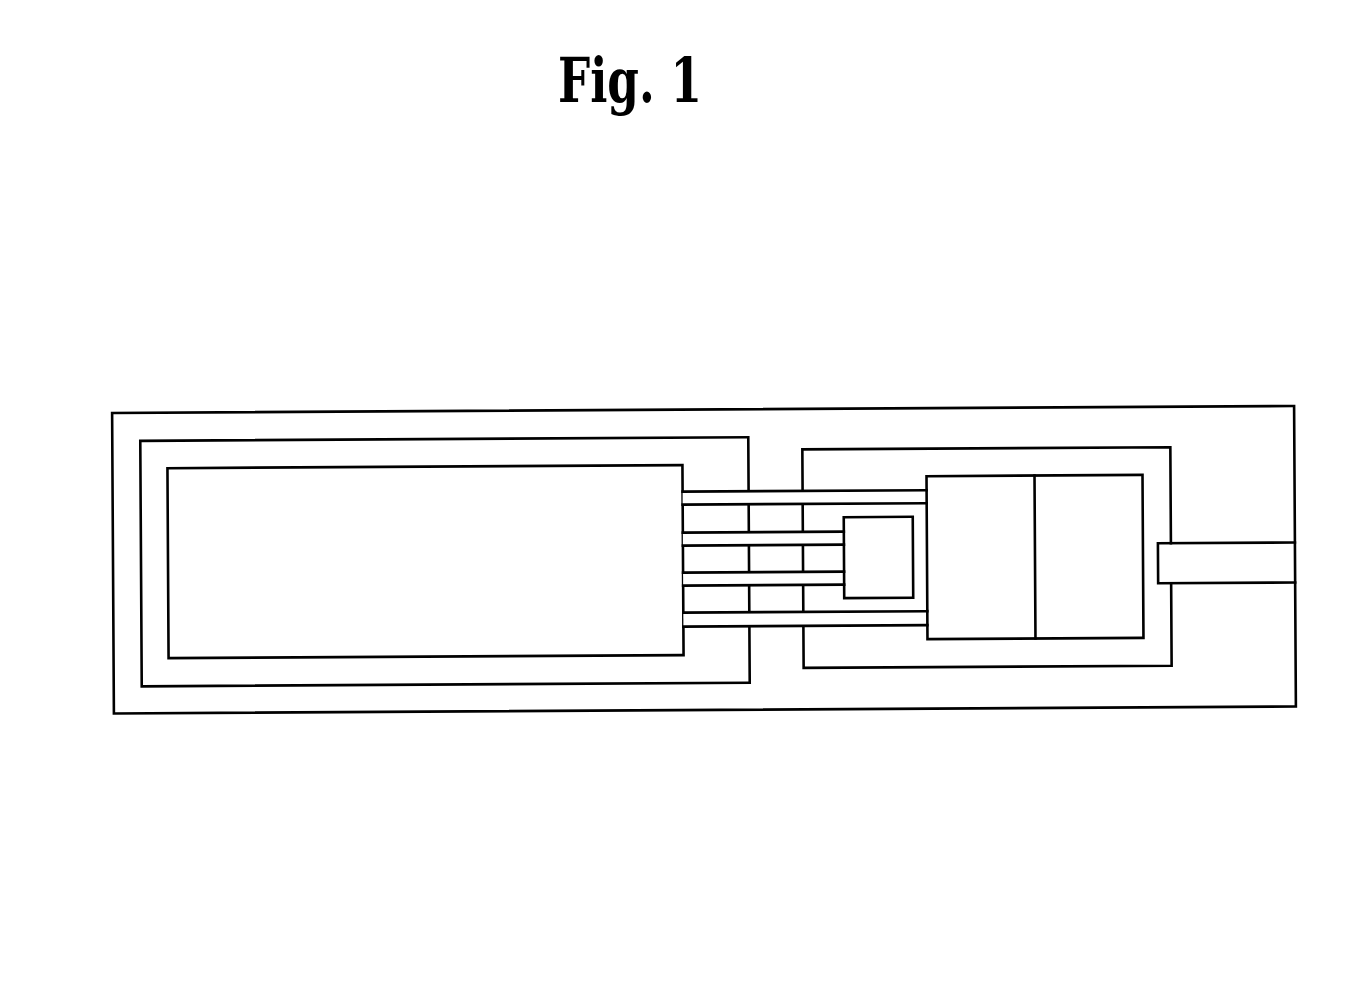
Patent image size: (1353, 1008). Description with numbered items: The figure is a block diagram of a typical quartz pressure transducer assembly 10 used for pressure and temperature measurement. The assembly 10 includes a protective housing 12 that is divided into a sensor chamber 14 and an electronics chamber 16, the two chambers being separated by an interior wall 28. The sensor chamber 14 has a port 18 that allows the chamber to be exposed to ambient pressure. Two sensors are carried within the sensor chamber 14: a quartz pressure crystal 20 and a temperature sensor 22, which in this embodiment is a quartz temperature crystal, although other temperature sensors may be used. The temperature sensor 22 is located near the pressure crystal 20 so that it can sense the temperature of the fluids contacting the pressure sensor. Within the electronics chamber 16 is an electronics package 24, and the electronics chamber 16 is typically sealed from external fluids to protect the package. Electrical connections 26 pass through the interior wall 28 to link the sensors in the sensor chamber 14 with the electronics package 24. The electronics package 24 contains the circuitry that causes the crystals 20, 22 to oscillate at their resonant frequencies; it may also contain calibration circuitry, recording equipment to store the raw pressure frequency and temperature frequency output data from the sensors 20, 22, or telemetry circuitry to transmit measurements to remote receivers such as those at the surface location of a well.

The quartz pressure transducer assembly 10 is at (147, 322).
The protective housing 12 is at (249, 424).
The sensor chamber 14 is at (832, 656).
The electronics chamber 16 is at (696, 453).
The port 18 is at (1212, 573).
The quartz pressure crystal 20 is at (982, 626).
The temperature sensor 22 is at (872, 531).
The electronics package 24 is at (210, 640).
The electrical connections 26 is at (732, 582).
The interior wall 28 is at (768, 458).